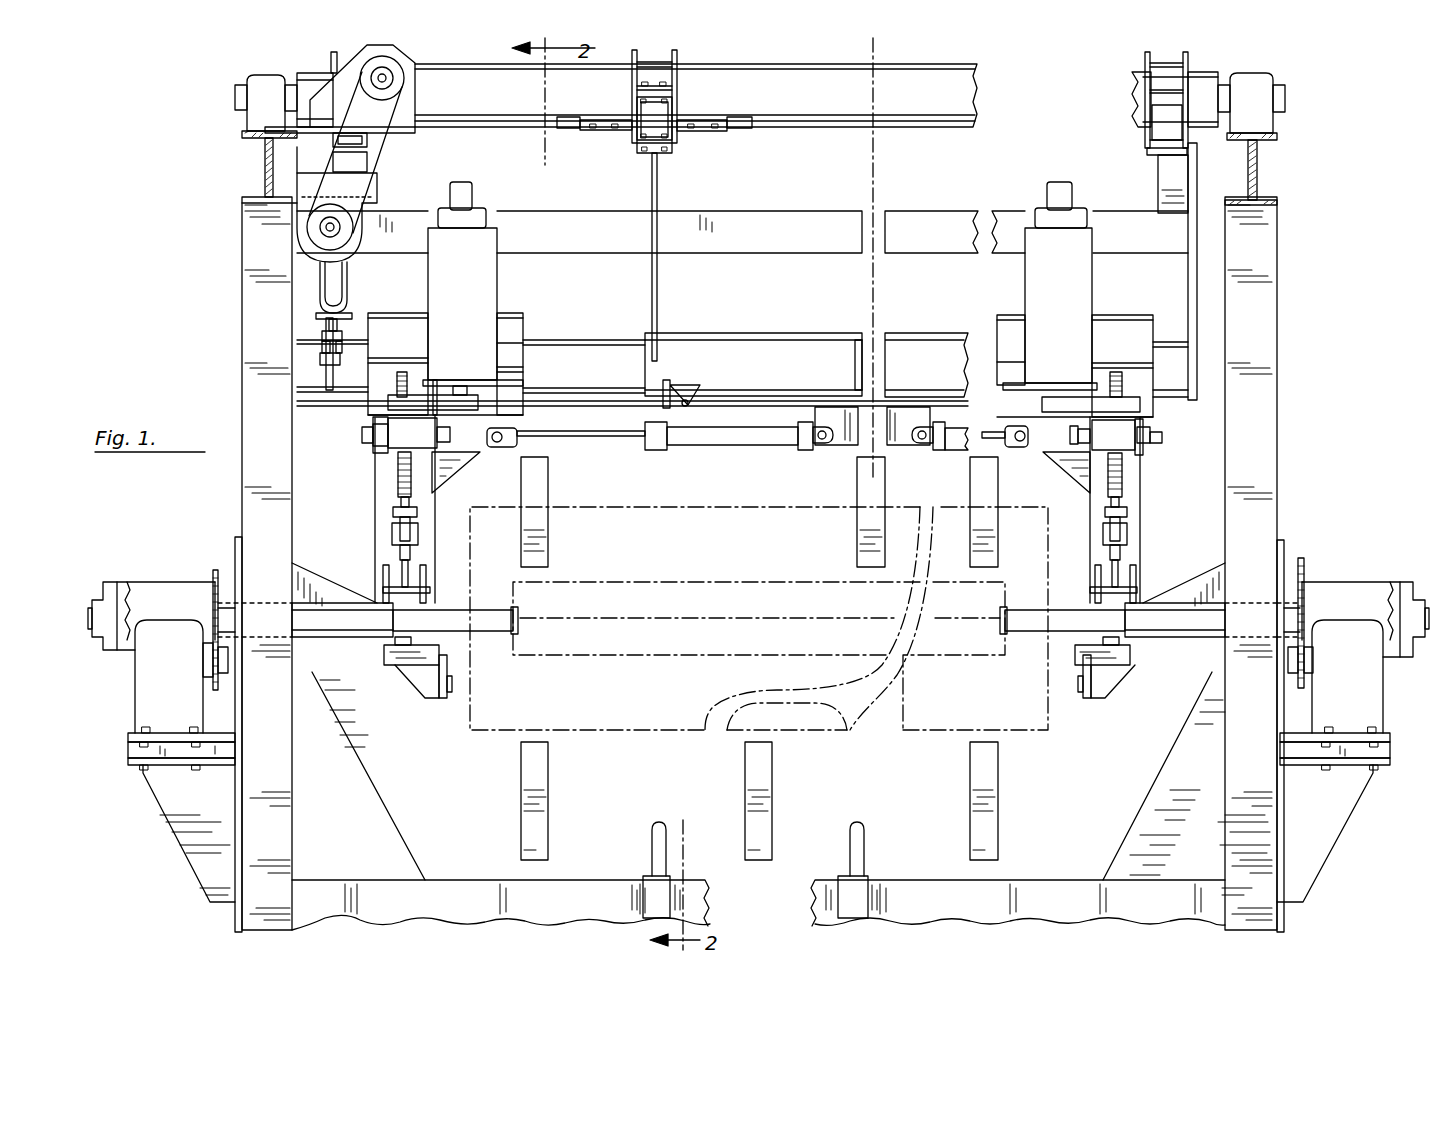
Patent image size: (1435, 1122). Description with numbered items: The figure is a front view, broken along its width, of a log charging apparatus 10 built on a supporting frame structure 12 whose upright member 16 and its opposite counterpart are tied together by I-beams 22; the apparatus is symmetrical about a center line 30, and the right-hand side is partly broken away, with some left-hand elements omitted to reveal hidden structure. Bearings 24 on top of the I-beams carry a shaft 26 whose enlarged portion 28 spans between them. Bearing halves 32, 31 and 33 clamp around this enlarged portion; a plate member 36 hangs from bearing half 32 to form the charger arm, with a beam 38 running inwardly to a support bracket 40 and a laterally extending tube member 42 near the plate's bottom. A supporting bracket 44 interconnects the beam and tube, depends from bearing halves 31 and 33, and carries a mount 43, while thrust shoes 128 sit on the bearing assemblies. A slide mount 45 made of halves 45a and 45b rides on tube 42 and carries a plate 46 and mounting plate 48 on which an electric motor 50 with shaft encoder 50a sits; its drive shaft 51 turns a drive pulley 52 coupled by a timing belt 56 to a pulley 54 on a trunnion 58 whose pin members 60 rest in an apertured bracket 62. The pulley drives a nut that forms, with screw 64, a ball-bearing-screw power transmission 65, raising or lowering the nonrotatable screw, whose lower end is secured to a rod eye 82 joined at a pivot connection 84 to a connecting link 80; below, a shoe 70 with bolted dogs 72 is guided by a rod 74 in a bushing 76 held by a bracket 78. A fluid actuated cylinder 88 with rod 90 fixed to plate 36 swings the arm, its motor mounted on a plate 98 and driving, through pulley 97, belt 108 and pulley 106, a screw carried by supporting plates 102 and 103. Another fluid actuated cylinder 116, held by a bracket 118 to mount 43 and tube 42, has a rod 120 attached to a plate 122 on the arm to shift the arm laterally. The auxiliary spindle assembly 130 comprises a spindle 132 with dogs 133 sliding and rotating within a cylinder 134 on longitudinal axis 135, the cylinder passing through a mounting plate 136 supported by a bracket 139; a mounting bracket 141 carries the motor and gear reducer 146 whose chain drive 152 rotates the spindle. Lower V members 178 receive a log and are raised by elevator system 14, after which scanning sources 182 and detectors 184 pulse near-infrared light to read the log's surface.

The charging apparatus 10 is at (190, 117).
The supporting frame structure 12 is at (200, 237).
The elevator system 14 is at (898, 890).
The upright member 16 is at (258, 318).
The I-beam 22 is at (265, 165).
The bearing 24 is at (265, 78).
The shaft 26 is at (236, 90).
The enlarged portion of shaft 28 is at (808, 118).
The center line / bearing half 30 is at (331, 56).
The bearing half 31 is at (654, 58).
The bearing half 32 is at (330, 140).
The bearing half 33 is at (668, 112).
The plate member 36 is at (1192, 185).
The beam 38 is at (793, 218).
The support bracket 40 is at (370, 168).
The tube member 42 is at (580, 345).
The mount 43 is at (782, 348).
The supporting bracket 44 is at (660, 198).
The slide mount 45 is at (545, 322).
The slide mount half 45a is at (400, 330).
The slide mount half 45b is at (527, 372).
The plate 46 is at (523, 414).
The mounting plate 48 is at (523, 382).
The electric motor 50 is at (478, 282).
The shaft encoder 50a is at (472, 190).
The drive shaft 51 is at (462, 386).
The drive pulley 52 is at (478, 398).
The pulley 54 is at (745, 383).
The timing belt 56 is at (438, 390).
The trunnion 58 is at (395, 440).
The pin member 60 is at (362, 443).
The apertured bracket 62 is at (373, 424).
The screw 64 is at (398, 475).
The power transmission means 65 is at (390, 498).
The shoe 70 is at (410, 668).
The dogs 72 is at (448, 692).
The rod 74 is at (383, 575).
The bushing 76 is at (420, 592).
The bracket 78 is at (427, 575).
The connecting link 80 is at (411, 550).
The rod eye 82 is at (418, 509).
The pivot connection 84 is at (419, 530).
The fluid actuated cylinder 88 is at (348, 272).
The extendible-retractable rod 90 is at (326, 332).
The pulley 97 is at (388, 64).
The plate 98 is at (416, 134).
The supporting plate 102 is at (377, 196).
The supporting plate 103 is at (310, 178).
The pulley 106 is at (343, 226).
The belt 108 is at (378, 148).
The fluid actuated cylinder 116 is at (722, 458).
The bracket 118 is at (838, 448).
The extendible-retractable rod 120 is at (608, 431).
The plate 122 is at (488, 445).
The thrust shoes 128 is at (600, 130).
The auxiliary spindle assembly 130 is at (160, 575).
The spindle 132 is at (497, 632).
The dogs 133 is at (518, 630).
The cylinder 134 is at (350, 637).
The longitudinal axis 135 is at (672, 616).
The mounting plate 136 is at (236, 540).
The bracket 139 is at (316, 575).
The mounting bracket 141 is at (128, 752).
The gear reducer 146 is at (145, 710).
The chain drive 152 is at (213, 612).
The lower V members 178 is at (652, 838).
The source 182 is at (548, 487).
The detector 184 is at (548, 752).